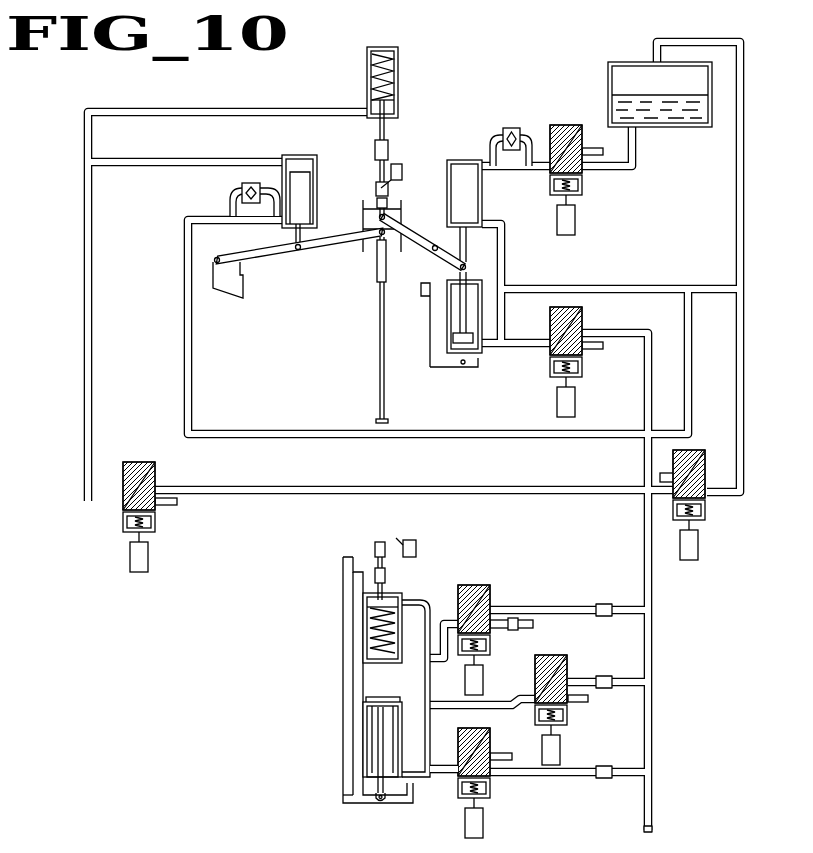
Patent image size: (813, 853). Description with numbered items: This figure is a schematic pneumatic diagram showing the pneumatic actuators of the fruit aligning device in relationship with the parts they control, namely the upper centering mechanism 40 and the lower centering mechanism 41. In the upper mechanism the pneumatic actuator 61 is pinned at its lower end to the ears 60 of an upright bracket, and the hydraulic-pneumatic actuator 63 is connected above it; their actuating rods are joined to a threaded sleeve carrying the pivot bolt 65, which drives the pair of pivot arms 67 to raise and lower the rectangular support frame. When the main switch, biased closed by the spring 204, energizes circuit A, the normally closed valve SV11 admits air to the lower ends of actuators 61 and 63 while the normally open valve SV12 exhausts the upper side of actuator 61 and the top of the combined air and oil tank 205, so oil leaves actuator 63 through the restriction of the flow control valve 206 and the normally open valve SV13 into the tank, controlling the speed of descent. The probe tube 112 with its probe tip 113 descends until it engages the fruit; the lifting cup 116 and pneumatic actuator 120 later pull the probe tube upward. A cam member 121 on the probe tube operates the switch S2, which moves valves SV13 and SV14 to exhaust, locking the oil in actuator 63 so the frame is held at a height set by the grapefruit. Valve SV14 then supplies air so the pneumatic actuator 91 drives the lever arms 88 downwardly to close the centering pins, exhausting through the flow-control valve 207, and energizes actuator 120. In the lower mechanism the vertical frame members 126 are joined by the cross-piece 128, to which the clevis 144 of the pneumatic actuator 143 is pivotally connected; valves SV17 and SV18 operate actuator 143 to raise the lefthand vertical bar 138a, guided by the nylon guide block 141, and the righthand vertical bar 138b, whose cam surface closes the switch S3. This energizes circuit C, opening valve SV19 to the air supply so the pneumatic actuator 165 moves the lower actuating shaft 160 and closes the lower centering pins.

The upper centering mechanism 40 is at (378, 261).
The lower centering mechanism 41 is at (349, 684).
The ears 60 is at (448, 368).
The pneumatic actuator 61 is at (447, 322).
The hydraulic-pneumatic actuator 63 is at (483, 190).
The pivot bolt 65 is at (466, 265).
The pivot arms 67 is at (466, 253).
The lever arms 88 is at (279, 250).
The pneumatic actuator 91 is at (293, 157).
The probe tube 112 is at (377, 148).
The probe tip 113 is at (378, 420).
The lifting cup 116 is at (389, 146).
The pneumatic actuator 120 is at (399, 56).
The cam member 121 is at (377, 190).
The vertical frame members 126 is at (346, 785).
The cross-piece 128 is at (355, 802).
The lefthand vertical bar 138a is at (396, 685).
The righthand vertical bar 138b is at (403, 760).
The nylon guide block 141 is at (343, 582).
The pneumatic actuator 143 is at (364, 752).
The clevis 144 is at (381, 805).
The lower actuating shaft 160 is at (372, 545).
The pneumatic actuator 165 is at (364, 628).
The spring 204 is at (178, 848).
The combined air and oil tank 205 is at (640, 62).
The flow control valve 206 is at (520, 133).
The flow-control valve 207 is at (230, 195).
The switch S2 is at (408, 172).
The switch S3 is at (413, 542).
The solenoid valve SV11 is at (618, 366).
The solenoid valve SV12 is at (745, 508).
The solenoid valve SV13 is at (583, 190).
The solenoid valve SV14 is at (155, 516).
The solenoid valve SV17 is at (533, 790).
The solenoid valve SV18 is at (597, 710).
The solenoid valve SV19 is at (482, 585).